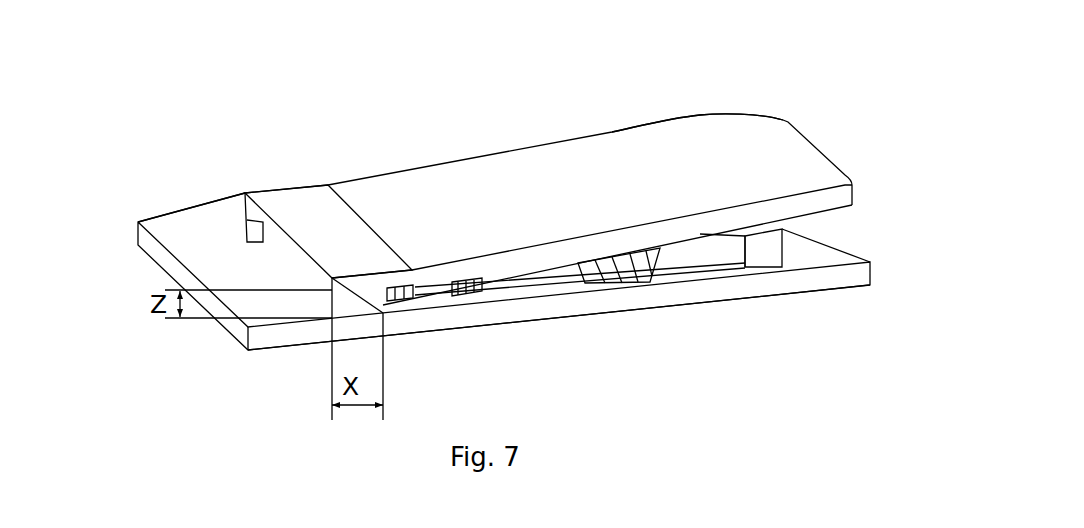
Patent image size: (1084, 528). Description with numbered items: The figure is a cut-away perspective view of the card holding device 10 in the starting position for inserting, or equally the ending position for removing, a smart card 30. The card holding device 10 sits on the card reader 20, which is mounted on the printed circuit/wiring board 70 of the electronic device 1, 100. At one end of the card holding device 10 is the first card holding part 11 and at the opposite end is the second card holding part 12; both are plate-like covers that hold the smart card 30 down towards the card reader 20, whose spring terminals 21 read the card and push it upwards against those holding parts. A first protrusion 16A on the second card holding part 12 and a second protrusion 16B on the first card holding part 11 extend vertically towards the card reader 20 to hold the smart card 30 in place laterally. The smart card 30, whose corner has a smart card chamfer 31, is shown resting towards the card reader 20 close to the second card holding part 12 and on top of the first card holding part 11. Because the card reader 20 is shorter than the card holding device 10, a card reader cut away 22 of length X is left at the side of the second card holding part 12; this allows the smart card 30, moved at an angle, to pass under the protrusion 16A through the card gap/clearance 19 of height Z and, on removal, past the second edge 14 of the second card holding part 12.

The electronic device 1 is at (488, 303).
The printed circuit/wiring board 70 is at (488, 303).
The electronic device 100 is at (488, 303).
The card holding device 10 is at (584, 310).
The first card holding part 11 is at (747, 238).
The second card holding part 12 is at (288, 202).
The second edge of the second card holding part 14 is at (358, 217).
The first protrusion at the second card holding part 16A is at (260, 222).
The second protrusion at the first card holding part 16B is at (783, 248).
The card gap/clearance 19 is at (265, 261).
The card reader 20 is at (700, 263).
The spring terminals 21 is at (575, 268).
The card reader cut away 22 is at (355, 312).
The smart card 30 is at (590, 172).
The smart card chamfer 31 is at (738, 115).